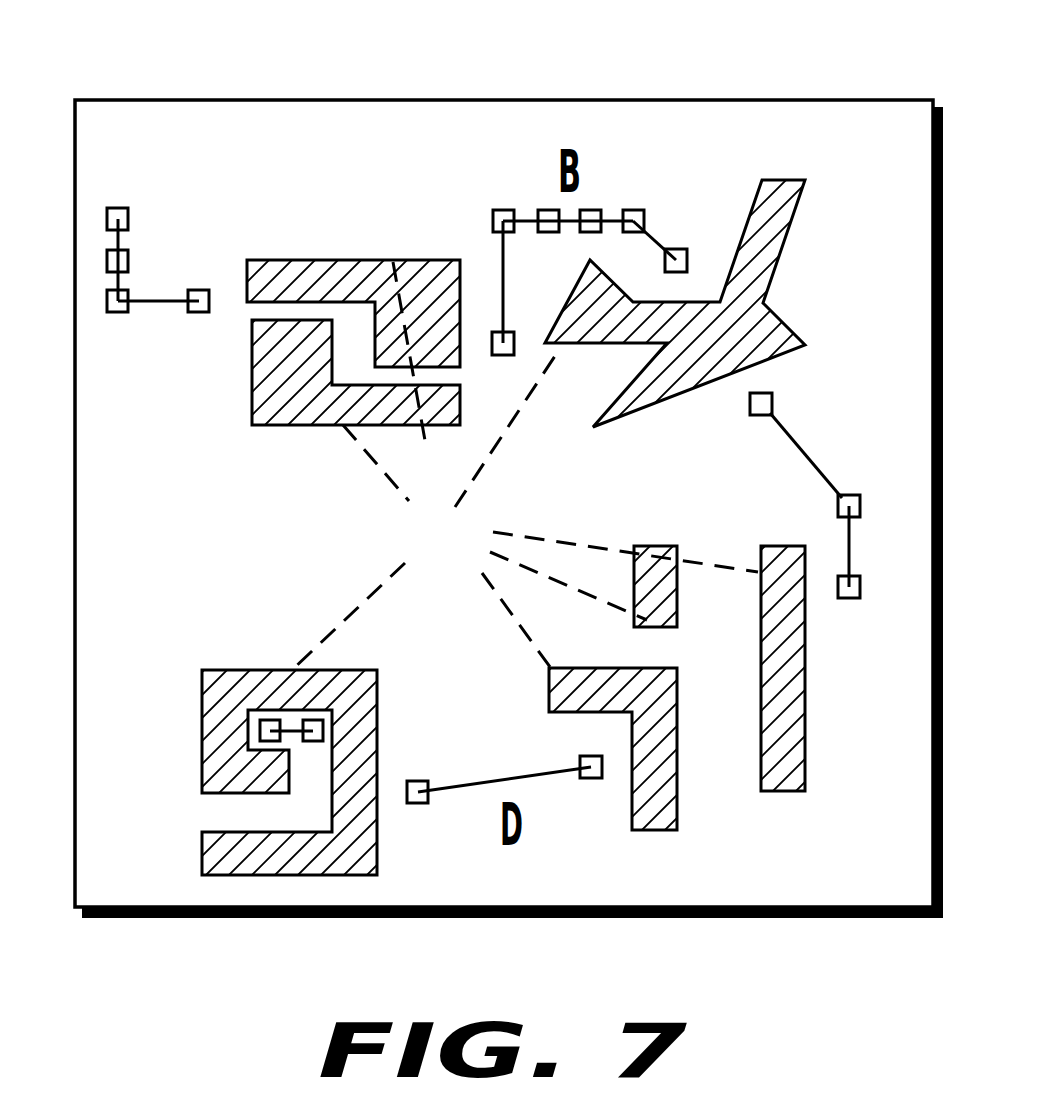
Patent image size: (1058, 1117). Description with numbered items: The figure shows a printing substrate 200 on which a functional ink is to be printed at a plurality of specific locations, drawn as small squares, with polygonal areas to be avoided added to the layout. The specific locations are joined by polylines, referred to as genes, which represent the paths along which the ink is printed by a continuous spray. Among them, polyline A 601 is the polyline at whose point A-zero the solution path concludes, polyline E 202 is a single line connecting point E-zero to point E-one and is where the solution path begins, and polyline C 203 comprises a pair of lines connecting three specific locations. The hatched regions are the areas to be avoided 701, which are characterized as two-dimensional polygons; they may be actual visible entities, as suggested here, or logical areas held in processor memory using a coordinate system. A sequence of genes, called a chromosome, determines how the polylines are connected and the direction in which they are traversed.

The printing substrate 200 is at (502, 98).
The polyline A 601 is at (187, 238).
The polyline E 202 is at (232, 592).
The polyline C 203 is at (750, 487).
The areas to be avoided 701 is at (525, 466).